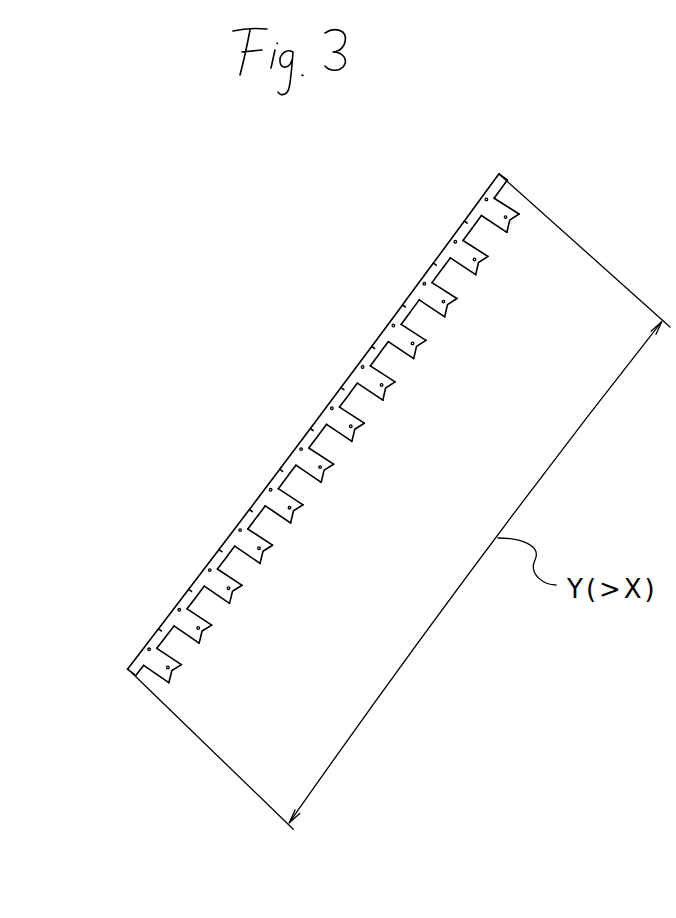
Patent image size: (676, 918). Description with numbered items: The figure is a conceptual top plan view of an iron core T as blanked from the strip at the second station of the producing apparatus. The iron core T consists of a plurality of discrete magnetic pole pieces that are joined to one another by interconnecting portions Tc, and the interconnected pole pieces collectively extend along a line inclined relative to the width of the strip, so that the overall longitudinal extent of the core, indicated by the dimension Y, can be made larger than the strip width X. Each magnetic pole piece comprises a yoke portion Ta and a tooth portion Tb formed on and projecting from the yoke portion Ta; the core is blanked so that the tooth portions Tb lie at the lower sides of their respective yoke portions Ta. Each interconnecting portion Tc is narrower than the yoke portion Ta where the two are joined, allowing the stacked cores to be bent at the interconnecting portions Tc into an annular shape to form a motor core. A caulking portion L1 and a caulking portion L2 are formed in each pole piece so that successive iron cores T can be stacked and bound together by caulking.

The iron core T is at (276, 362).
The yoke portion Ta is at (172, 601).
The tooth portion Tb is at (157, 664).
The interconnecting portion Tc is at (189, 583).
The caulking portion L1 is at (186, 581).
The caulking portion L2 is at (170, 683).